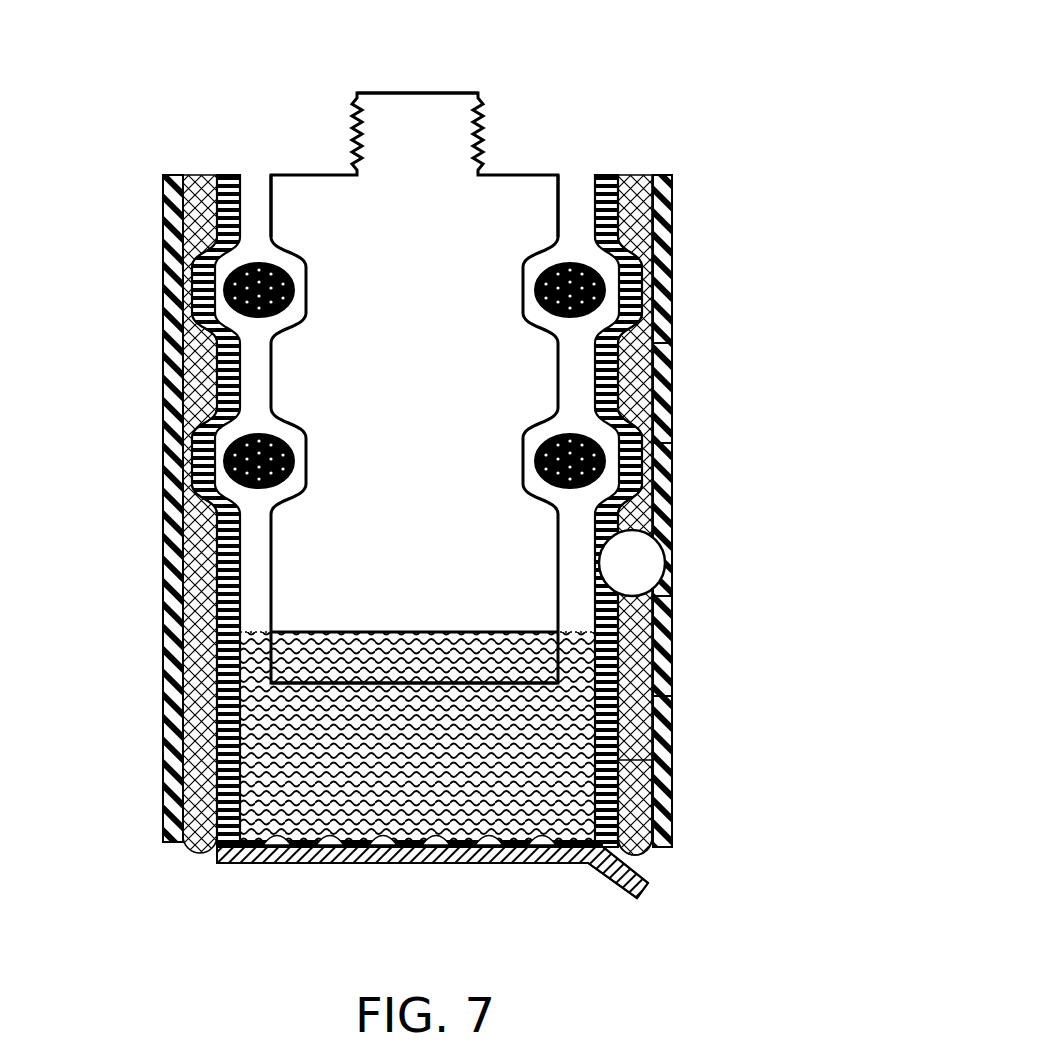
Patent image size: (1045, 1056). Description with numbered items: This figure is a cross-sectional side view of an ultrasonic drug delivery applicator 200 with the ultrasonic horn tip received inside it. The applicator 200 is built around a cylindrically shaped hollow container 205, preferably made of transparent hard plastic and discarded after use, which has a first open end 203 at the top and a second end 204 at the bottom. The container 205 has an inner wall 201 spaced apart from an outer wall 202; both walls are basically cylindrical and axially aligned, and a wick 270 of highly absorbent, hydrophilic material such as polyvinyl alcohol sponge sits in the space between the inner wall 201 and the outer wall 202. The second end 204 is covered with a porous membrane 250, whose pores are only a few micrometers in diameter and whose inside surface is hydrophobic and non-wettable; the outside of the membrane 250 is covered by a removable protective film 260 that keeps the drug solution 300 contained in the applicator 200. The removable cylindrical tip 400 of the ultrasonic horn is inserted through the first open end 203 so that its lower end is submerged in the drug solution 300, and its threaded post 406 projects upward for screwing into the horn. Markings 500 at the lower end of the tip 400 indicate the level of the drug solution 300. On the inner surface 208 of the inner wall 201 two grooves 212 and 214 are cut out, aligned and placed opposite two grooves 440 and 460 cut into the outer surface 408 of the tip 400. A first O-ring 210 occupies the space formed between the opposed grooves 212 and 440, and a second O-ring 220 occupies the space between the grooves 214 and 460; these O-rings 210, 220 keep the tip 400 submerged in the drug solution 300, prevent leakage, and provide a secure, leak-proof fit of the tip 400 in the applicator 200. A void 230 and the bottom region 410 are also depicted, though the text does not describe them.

The drug delivery applicator 200 is at (683, 133).
The inner wall 201 is at (223, 173).
The outer wall 202 is at (162, 370).
The first open end 203 is at (260, 180).
The second end 204 is at (242, 865).
The cylindrical container 205 is at (165, 230).
The inner surface 208 is at (240, 193).
The first O-ring 210 is at (617, 252).
The groove 212 is at (620, 207).
The groove 214 is at (633, 352).
The second O-ring 220 is at (632, 393).
The void / bubble 230 is at (642, 555).
The porous membrane 250 is at (383, 850).
The removable protective film 260 is at (520, 868).
The wick 270 is at (672, 618).
The drug solution 300 is at (610, 803).
The cylindrical tip 400 is at (297, 173).
The threaded post 406 is at (407, 103).
The outer surface 408 is at (555, 235).
The body bottom 410 is at (377, 683).
The groove 440 is at (528, 312).
The groove 460 is at (528, 477).
The markings 500 is at (333, 632).